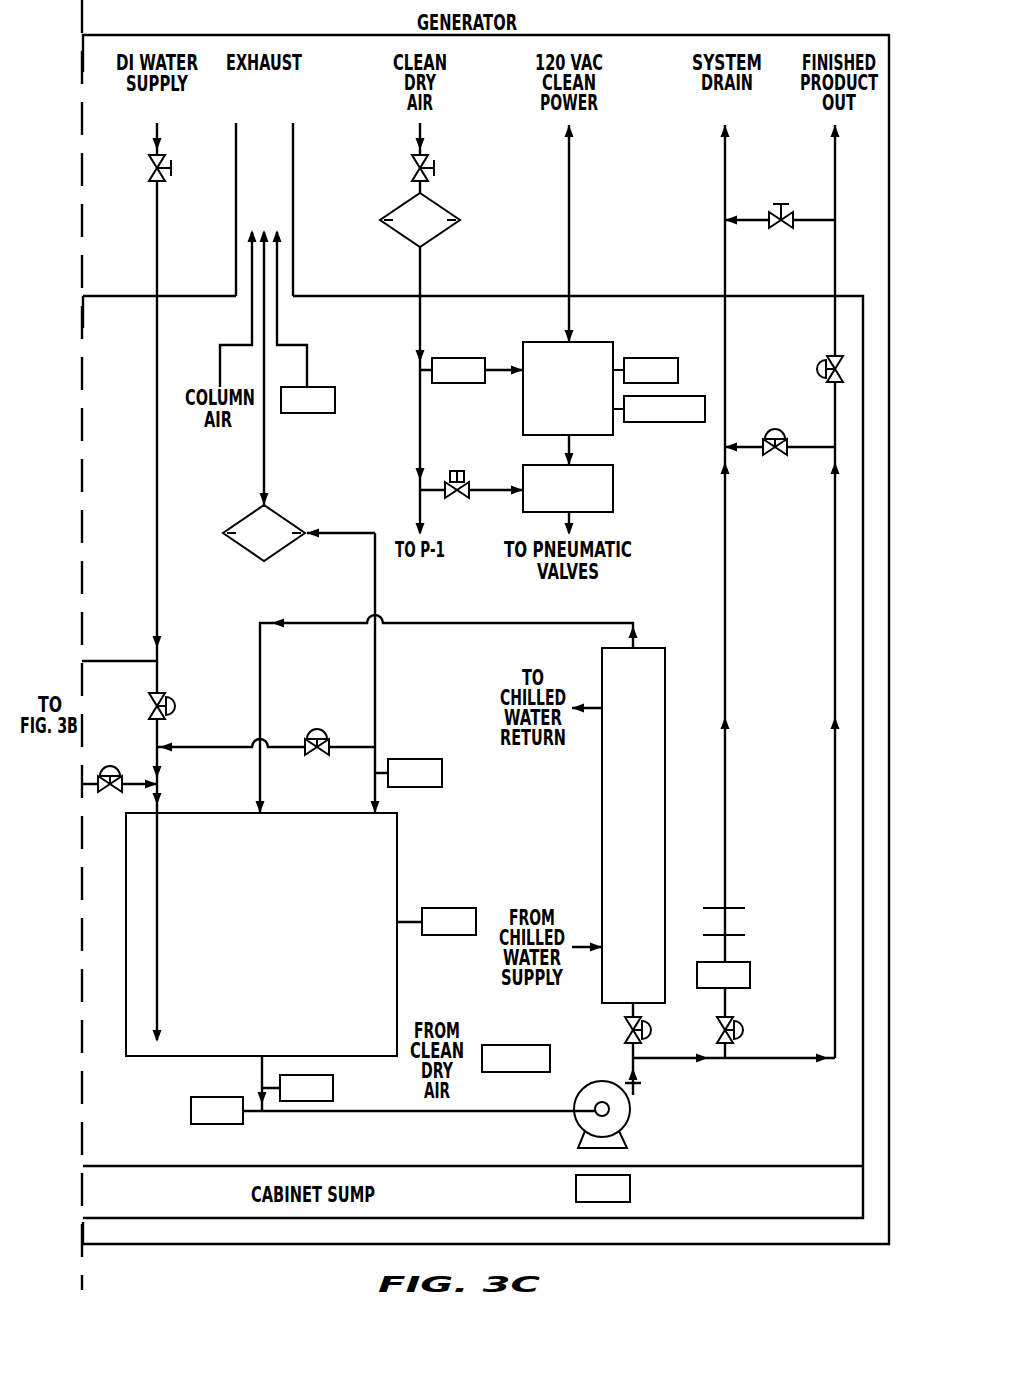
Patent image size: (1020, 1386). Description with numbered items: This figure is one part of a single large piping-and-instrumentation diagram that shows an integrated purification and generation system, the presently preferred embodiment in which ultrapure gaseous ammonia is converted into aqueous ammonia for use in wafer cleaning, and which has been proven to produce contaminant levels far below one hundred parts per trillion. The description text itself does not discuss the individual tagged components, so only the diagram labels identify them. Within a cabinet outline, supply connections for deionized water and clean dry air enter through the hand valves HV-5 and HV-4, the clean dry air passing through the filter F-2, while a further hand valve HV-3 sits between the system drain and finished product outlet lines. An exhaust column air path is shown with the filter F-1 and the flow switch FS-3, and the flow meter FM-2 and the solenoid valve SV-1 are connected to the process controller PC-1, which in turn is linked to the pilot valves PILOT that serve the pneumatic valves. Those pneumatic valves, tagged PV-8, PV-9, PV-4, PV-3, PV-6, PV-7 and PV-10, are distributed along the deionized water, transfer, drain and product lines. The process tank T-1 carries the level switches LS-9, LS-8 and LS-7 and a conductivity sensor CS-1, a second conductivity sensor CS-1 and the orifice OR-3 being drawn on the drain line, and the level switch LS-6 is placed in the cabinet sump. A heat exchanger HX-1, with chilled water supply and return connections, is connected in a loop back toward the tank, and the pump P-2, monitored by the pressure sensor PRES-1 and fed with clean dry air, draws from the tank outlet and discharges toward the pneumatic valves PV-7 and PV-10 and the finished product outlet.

The DI water supply hand valve HV-5 is at (184, 168).
The clean dry air hand valve HV-4 is at (447, 168).
The finished product drain hand valve HV-3 is at (780, 204).
The clean dry air filter F-2 is at (420, 220).
The column air filter F-1 is at (264, 533).
The flow switch FS-3 is at (308, 400).
The flow meter FM-2 is at (458, 370).
The process controller PC-1 is at (614, 388).
The pilot valves PILOT is at (568, 489).
The solenoid valve SV-1 is at (456, 473).
The pneumatic valve PV-8 is at (807, 369).
The pneumatic valve PV-9 is at (775, 429).
The pneumatic valve PV-4 is at (183, 706).
The pneumatic valve PV-3 is at (110, 766).
The pneumatic valve PV-6 is at (317, 726).
The pneumatic valve PV-7 is at (660, 1030).
The pneumatic valve PV-10 is at (756, 1030).
The level switch LS-9 is at (415, 773).
The level switch LS-8 is at (449, 921).
The level switch LS-7 is at (306, 1088).
The cabinet sump level switch LS-6 is at (603, 1188).
The heat exchanger HX-1 is at (633, 825).
The process tank T-1 is at (261, 934).
The orifice OR-3 is at (724, 921).
The conductivity sensor CS-1 is at (470, 1043).
The pressure sensor PRES-1 is at (582, 1086).
The pump P-2 is at (621, 1114).